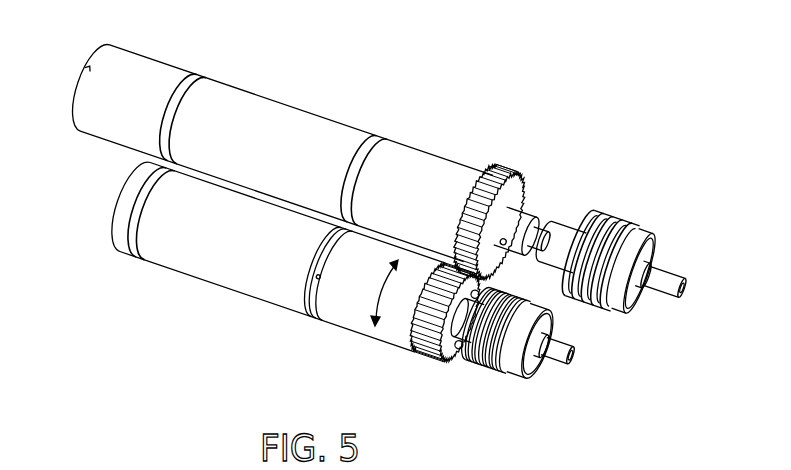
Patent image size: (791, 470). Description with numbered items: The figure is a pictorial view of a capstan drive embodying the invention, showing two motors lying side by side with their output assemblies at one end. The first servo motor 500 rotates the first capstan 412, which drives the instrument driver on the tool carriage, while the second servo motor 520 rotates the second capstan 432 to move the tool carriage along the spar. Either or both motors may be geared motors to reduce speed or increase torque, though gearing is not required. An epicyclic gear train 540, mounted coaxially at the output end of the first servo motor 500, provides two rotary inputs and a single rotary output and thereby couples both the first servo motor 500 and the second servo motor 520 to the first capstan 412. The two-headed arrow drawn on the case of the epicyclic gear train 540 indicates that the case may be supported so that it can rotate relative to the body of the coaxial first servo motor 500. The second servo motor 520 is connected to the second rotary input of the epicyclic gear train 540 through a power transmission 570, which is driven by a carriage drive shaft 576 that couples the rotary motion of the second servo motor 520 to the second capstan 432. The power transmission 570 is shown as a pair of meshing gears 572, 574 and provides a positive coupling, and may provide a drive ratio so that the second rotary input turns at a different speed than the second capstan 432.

The first servo motor 500 is at (220, 287).
The second servo motor 520 is at (300, 104).
The epicyclic gear train 540 is at (419, 345).
The power transmission 570 is at (583, 233).
The gear 572 is at (518, 188).
The gear 574 is at (457, 358).
The carriage drive shaft 576 is at (536, 222).
The first capstan 412 is at (547, 363).
The second capstan 432 is at (656, 250).